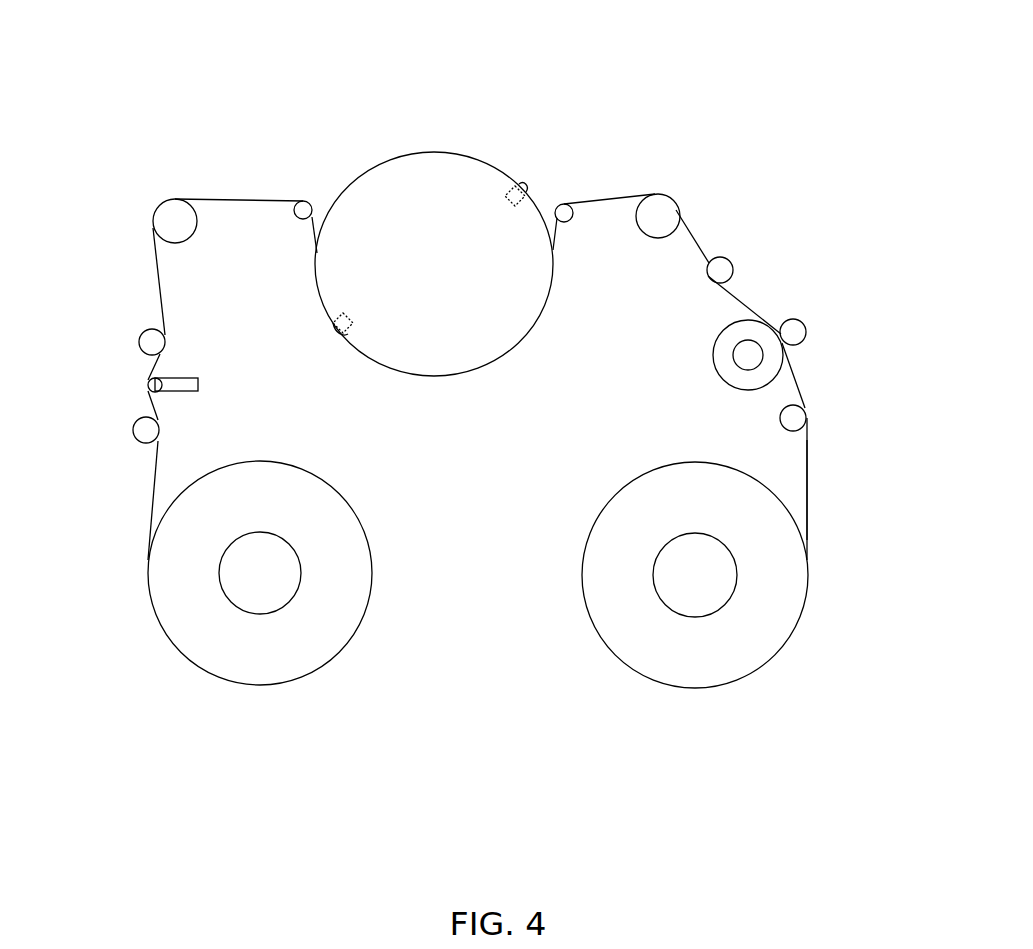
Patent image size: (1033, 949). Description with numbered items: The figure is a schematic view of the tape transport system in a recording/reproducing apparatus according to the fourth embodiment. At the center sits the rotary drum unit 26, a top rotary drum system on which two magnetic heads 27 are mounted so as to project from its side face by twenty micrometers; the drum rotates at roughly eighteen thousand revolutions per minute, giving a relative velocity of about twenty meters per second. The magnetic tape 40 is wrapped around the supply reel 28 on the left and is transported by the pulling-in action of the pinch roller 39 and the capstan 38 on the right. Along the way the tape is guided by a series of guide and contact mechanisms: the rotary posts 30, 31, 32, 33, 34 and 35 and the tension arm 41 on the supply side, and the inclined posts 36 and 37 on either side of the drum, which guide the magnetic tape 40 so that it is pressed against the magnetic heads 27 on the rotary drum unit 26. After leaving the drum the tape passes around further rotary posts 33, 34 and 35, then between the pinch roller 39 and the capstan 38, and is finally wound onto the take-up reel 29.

The rotary drum unit 26 is at (447, 320).
The magnetic heads 27 is at (343, 313).
The supply reel 28 is at (170, 602).
The take-up reel 29 is at (755, 610).
The rotary post 30 is at (140, 430).
The rotary post 31 is at (148, 335).
The rotary post 32 is at (170, 207).
The rotary post 33 is at (663, 197).
The rotary post 34 is at (733, 268).
The rotary post 35 is at (806, 417).
The inclined post 36 is at (305, 200).
The inclined post 37 is at (563, 204).
The capstan 38 is at (806, 328).
The pinch roller 39 is at (723, 362).
The magnetic tape 40 is at (807, 478).
The tension arm 41 is at (198, 385).